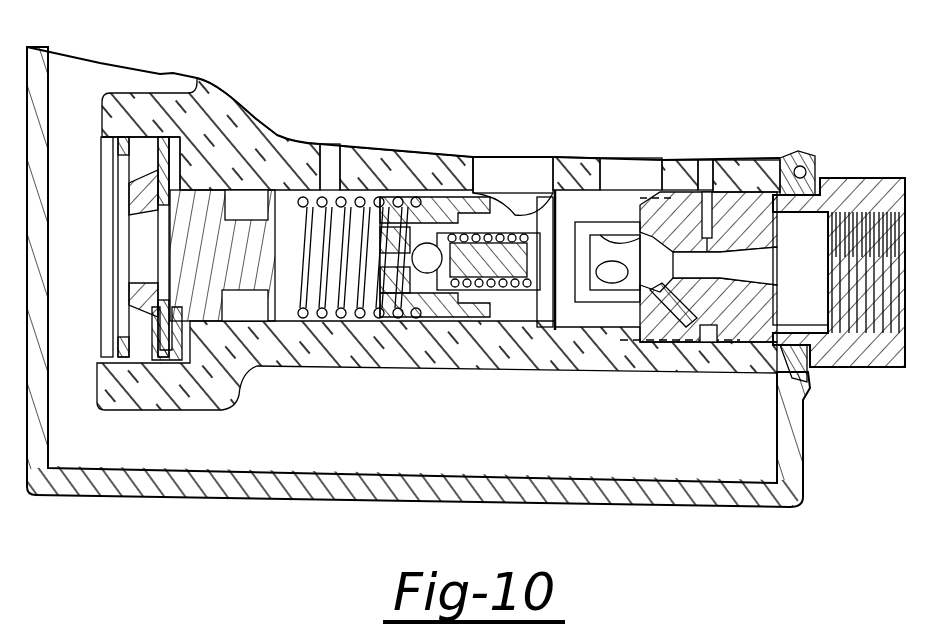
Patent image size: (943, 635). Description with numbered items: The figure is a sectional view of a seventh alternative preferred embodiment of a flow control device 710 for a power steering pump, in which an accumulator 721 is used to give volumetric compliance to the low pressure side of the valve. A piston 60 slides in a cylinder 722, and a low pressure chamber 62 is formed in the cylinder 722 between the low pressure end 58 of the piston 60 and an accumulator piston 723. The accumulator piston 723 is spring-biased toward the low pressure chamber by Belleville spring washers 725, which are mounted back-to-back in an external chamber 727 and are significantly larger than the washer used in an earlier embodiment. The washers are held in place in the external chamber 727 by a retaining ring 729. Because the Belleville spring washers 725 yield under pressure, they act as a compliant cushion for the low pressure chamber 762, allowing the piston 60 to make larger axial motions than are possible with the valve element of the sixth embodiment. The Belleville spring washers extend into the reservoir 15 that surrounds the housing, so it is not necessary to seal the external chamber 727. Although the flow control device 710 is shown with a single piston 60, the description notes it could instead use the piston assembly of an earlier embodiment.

The reservoir 15 is at (684, 455).
The low pressure end 58 is at (317, 320).
The piston 60 is at (467, 320).
The low pressure chamber 62 is at (377, 170).
The flow control device 710 is at (481, 142).
The accumulator 721 is at (203, 162).
The cylinder 722 is at (520, 335).
The accumulator piston 723 is at (268, 155).
The Belleville spring washers 725 is at (162, 140).
The external chamber 727 is at (145, 372).
The retaining ring 729 is at (103, 137).
The low pressure chamber 762 is at (318, 325).